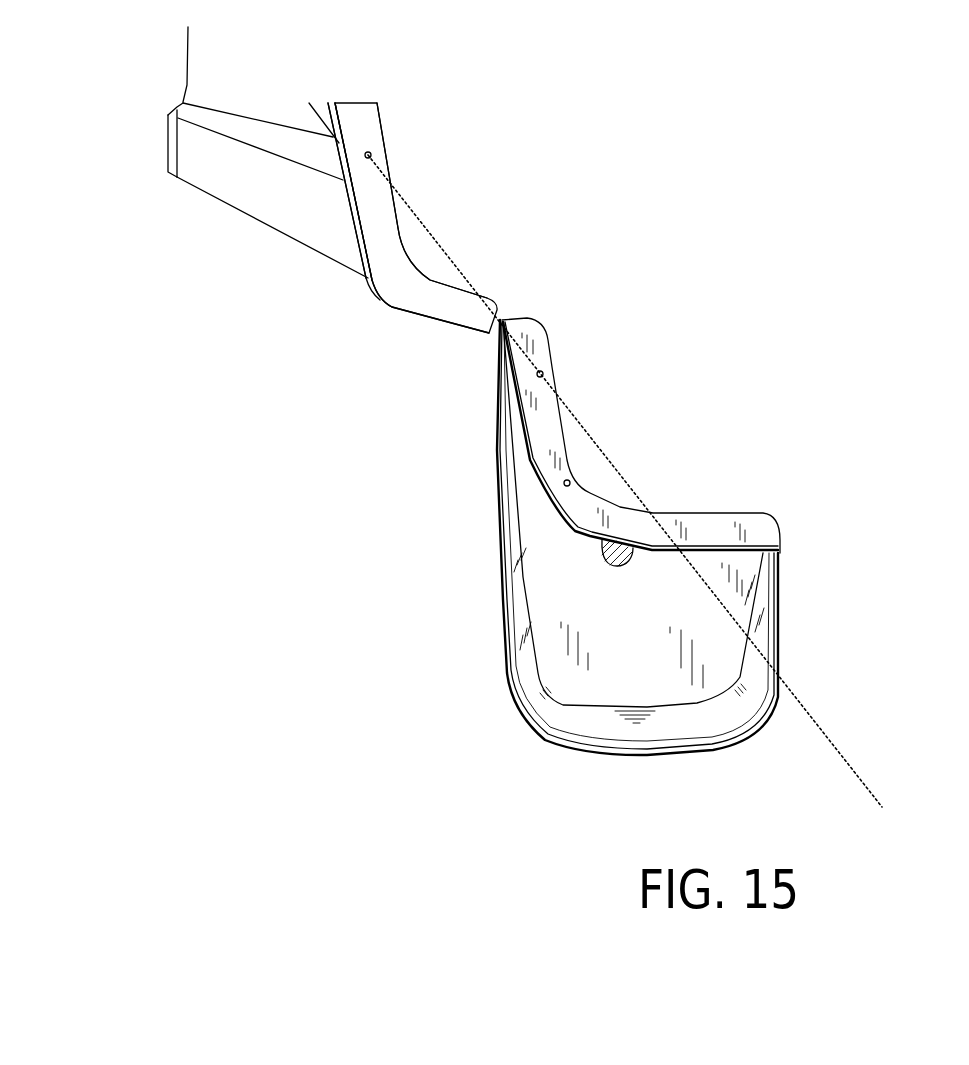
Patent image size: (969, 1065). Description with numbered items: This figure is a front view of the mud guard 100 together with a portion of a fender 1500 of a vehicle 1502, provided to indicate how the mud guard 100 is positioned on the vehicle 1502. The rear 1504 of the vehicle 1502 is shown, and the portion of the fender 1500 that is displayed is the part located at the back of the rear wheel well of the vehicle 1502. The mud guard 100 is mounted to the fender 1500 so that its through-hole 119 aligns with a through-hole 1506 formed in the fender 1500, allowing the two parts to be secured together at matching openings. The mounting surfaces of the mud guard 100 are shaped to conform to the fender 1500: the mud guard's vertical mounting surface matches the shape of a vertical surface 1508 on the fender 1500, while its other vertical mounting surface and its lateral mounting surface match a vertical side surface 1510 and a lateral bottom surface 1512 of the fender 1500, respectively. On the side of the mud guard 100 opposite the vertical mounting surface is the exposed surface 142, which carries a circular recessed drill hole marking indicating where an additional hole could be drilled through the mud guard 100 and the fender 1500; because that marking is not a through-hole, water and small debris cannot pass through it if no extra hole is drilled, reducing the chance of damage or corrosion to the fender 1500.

The mud guard 100 is at (507, 668).
The through-hole 119 is at (543, 375).
The exposed surface 142 is at (537, 422).
The fender 1500 is at (382, 262).
The vehicle 1502 is at (213, 223).
The rear 1504 is at (172, 108).
The through-hole 1506 is at (372, 155).
The vertical surface 1508 is at (380, 225).
The vertical side surface 1510 is at (357, 232).
The lateral bottom surface 1512 is at (427, 316).